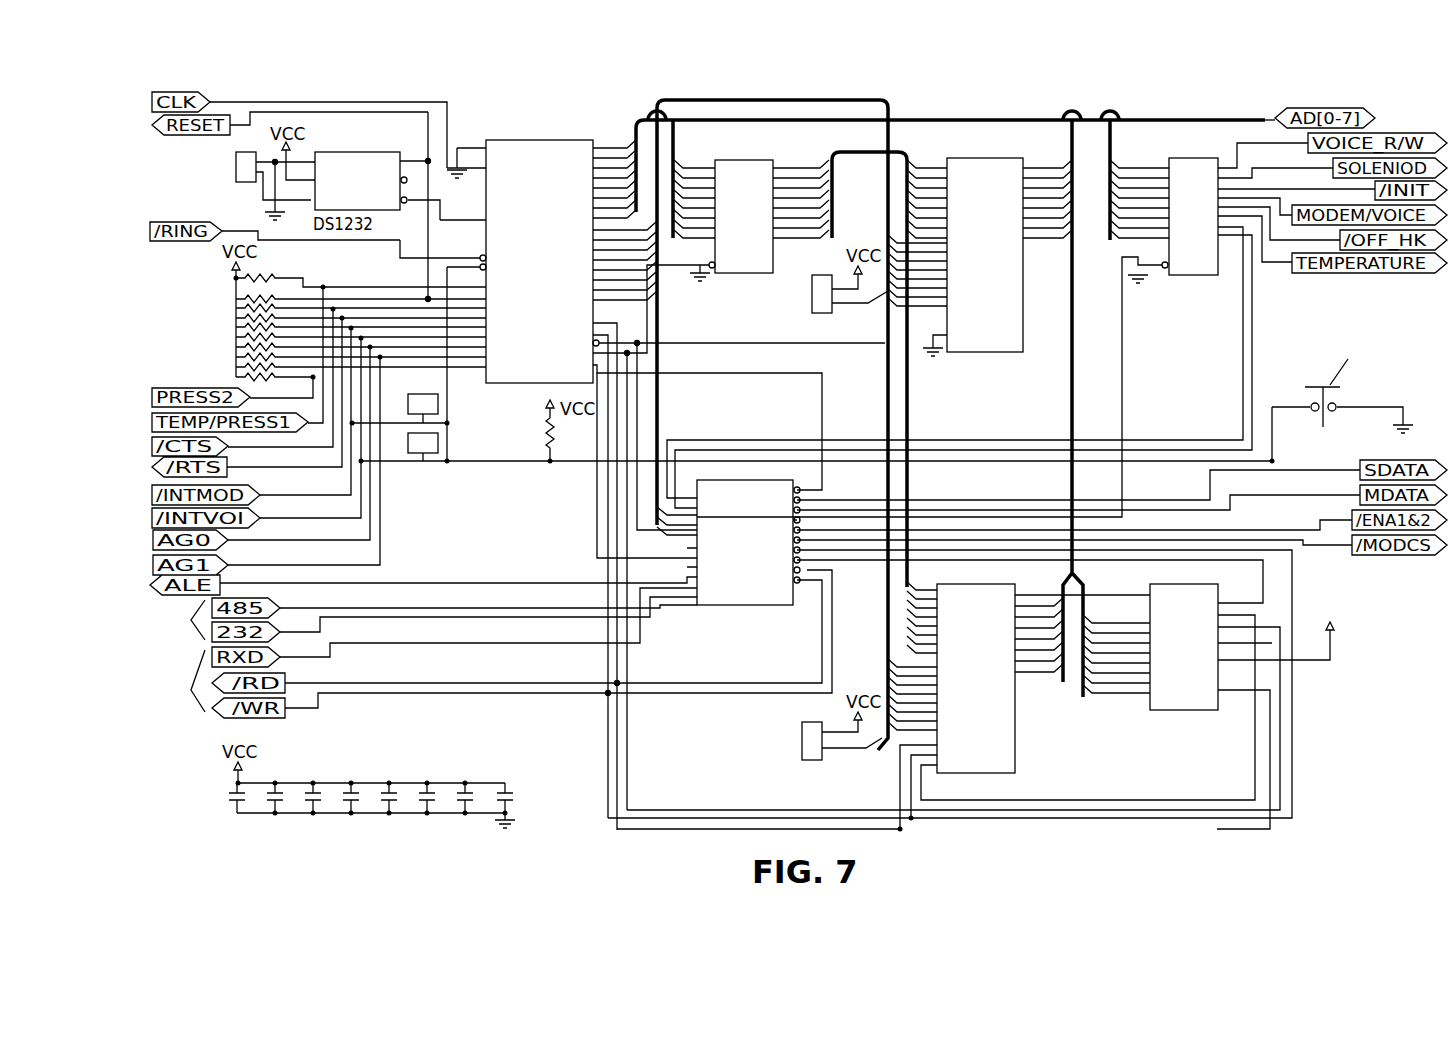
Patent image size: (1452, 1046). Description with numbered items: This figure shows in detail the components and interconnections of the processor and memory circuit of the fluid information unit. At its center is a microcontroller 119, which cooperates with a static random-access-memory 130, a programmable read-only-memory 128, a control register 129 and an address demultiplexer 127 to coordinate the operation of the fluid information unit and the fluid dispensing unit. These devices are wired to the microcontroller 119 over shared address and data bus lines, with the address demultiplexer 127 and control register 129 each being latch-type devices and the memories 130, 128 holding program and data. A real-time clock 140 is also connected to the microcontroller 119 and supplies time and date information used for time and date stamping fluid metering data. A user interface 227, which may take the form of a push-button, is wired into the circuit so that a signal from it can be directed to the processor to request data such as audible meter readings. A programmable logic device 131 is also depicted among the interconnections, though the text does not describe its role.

The microcontroller 119 is at (556, 272).
The address demultiplexer 127 is at (763, 222).
The programmable read-only-memory 128 is at (1003, 252).
The control register 129 is at (1212, 220).
The static random-access-memory 130 is at (993, 684).
The programmable logic device 22V10-15 131 is at (758, 552).
The real-time clock 140 is at (1204, 650).
The user interface 227 is at (1342, 400).